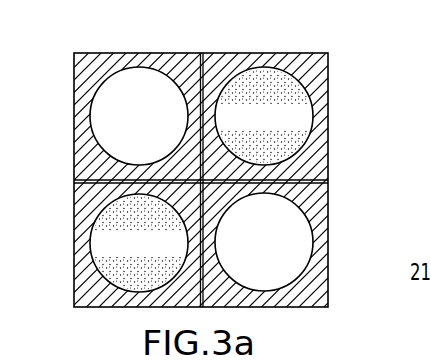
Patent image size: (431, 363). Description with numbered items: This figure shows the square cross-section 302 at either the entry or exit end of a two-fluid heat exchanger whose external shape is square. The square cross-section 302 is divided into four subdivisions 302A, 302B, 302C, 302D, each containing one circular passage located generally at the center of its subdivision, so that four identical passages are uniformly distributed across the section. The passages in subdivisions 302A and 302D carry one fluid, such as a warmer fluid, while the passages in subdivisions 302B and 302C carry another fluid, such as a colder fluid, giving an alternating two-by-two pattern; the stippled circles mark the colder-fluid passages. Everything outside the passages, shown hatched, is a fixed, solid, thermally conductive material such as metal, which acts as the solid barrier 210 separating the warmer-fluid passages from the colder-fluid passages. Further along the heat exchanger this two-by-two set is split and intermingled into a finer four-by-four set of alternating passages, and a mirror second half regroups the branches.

The square cross-section 302 is at (210, 179).
The subdivision 302A is at (83, 138).
The subdivision 302B is at (317, 135).
The subdivision 302C is at (83, 216).
The subdivision 302D is at (318, 221).
The solid barrier 210 is at (87, 293).